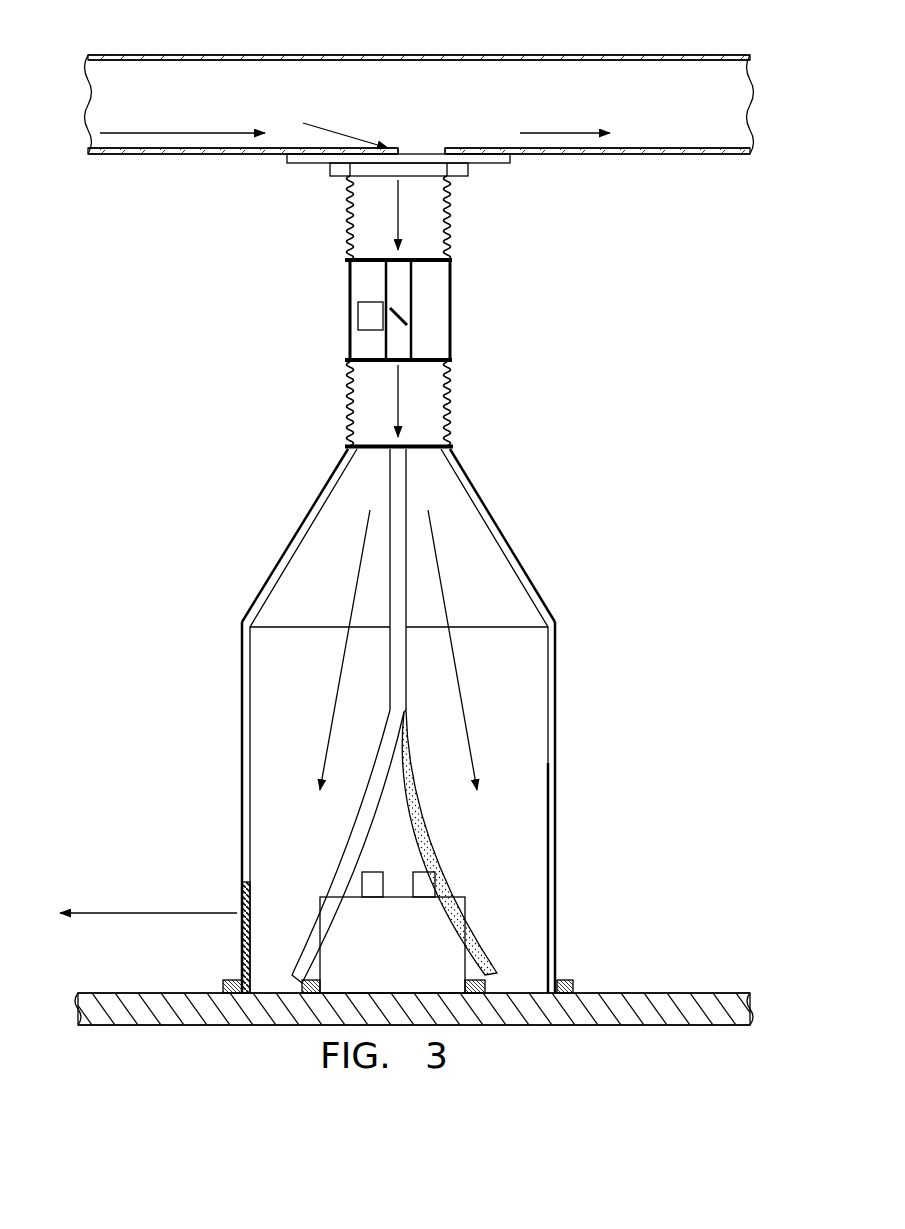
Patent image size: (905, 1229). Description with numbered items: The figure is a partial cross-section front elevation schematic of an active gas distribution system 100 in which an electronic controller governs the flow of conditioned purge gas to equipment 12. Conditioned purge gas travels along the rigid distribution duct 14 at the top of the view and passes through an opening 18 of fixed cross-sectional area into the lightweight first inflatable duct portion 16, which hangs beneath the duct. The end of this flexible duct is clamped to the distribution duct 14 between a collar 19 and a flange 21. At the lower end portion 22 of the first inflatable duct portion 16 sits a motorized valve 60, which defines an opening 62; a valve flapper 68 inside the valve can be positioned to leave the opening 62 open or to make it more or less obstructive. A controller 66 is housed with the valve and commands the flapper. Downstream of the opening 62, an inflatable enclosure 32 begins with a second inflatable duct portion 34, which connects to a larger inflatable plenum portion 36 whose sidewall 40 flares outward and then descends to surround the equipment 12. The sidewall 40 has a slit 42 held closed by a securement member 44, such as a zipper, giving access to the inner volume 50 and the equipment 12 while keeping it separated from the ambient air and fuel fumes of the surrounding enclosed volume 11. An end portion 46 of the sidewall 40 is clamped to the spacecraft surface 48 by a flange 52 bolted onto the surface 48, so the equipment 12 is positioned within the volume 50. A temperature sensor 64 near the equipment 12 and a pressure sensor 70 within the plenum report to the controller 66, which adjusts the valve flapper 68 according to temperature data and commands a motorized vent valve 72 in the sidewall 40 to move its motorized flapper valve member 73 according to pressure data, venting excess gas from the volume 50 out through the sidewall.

The gas distribution system 100 is at (574, 50).
The distribution duct 14 is at (630, 156).
The opening 18 is at (422, 145).
The collar 19 is at (512, 163).
The flange 21 is at (328, 170).
The first inflatable duct portion 16 is at (452, 227).
The end portion 22 is at (459, 260).
The motorized valve 60 is at (414, 309).
The opening 62 is at (384, 282).
The controller 66 is at (367, 315).
The valve flapper 68 is at (398, 326).
The second inflatable duct portion 34 is at (452, 391).
The enclosed volume 11 is at (422, 687).
The inflatable enclosure 32 is at (494, 492).
The inflatable plenum portion 36 is at (239, 668).
The sidewall 40 is at (276, 565).
The slit 42 is at (397, 792).
The volume 50 is at (388, 838).
The securement member 44 is at (360, 853).
The equipment 12 is at (401, 923).
The pressure sensor 70 is at (365, 880).
The temperature sensor 64 is at (420, 878).
The end portion 46 is at (553, 953).
The flange 52 is at (233, 980).
The motorized vent valve 72 is at (238, 907).
The motorized flapper valve member 73 is at (238, 917).
The surface 48 is at (163, 993).